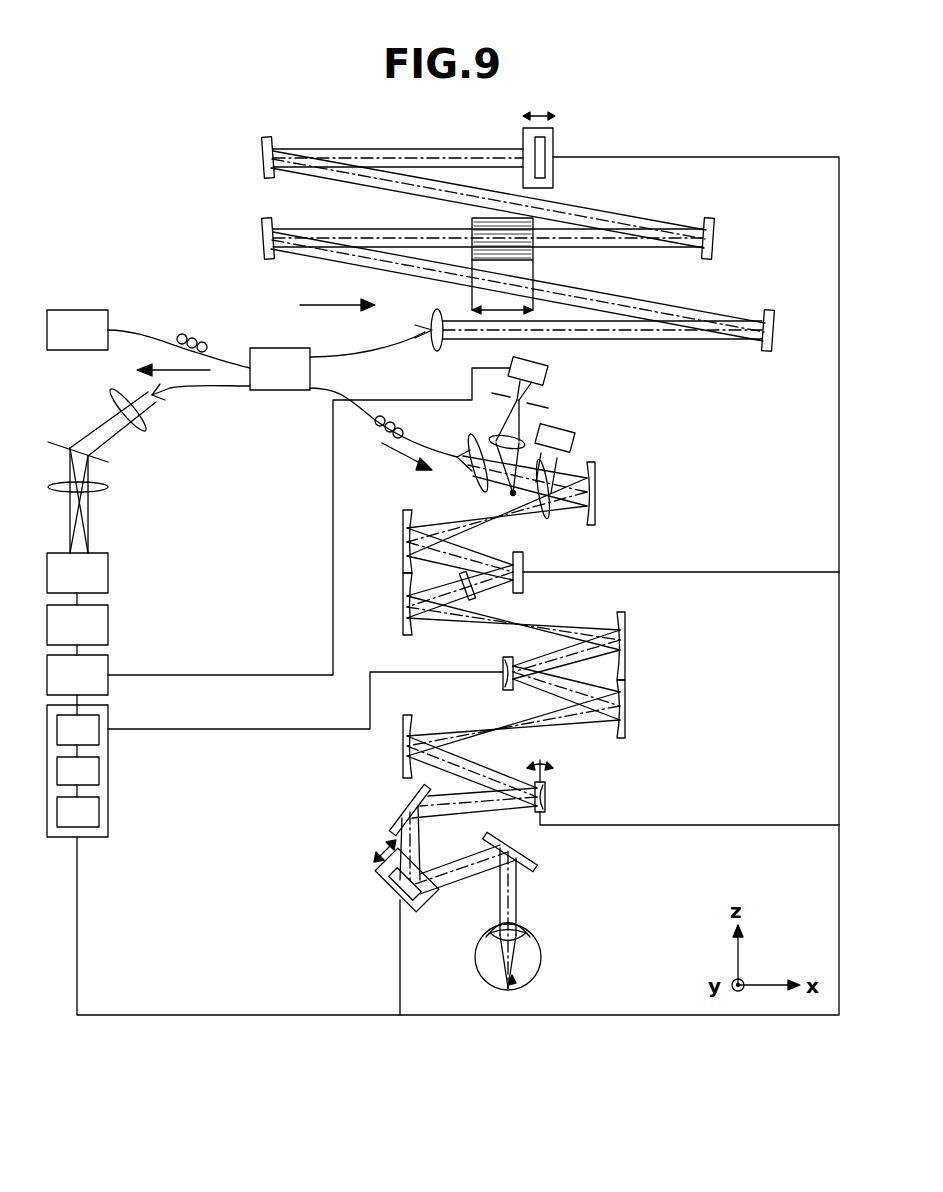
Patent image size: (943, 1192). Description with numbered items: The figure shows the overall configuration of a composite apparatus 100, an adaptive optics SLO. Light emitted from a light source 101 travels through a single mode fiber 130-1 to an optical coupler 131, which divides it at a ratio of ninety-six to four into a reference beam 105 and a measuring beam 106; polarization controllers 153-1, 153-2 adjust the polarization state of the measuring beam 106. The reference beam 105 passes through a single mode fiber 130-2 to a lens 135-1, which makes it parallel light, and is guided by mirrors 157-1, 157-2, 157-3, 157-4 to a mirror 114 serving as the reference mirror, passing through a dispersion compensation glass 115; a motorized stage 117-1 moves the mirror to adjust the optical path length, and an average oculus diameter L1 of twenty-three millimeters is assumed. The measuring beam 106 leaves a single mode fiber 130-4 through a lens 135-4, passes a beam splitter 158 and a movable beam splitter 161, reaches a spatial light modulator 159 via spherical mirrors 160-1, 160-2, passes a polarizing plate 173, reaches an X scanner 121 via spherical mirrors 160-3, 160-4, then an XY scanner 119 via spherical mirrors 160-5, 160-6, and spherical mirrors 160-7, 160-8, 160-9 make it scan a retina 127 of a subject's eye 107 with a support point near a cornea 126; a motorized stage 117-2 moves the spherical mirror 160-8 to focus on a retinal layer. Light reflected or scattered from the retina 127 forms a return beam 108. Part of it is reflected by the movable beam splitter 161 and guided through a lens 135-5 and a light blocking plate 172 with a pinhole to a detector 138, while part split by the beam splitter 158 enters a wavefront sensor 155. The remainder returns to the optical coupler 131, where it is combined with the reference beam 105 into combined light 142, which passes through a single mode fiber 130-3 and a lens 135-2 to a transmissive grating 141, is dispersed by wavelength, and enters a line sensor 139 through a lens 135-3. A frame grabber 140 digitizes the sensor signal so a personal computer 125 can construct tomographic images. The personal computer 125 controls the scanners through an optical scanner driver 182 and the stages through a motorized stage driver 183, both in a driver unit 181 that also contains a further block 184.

The composite apparatus 100 is at (116, 191).
The light source 101 is at (73, 322).
The reference beam 105 is at (320, 302).
The measuring beam 106 is at (386, 471).
The subject's eye 107 is at (540, 942).
The return beam 108 is at (530, 981).
The mirror 114 is at (545, 172).
The dispersion compensation glass 115 is at (533, 262).
The motorized stage 117-1 is at (545, 138).
The motorized stage 117-2 is at (387, 886).
The XY scanner 119 is at (547, 788).
The X scanner 121 is at (501, 668).
The personal computer 125 is at (100, 663).
The cornea 126 is at (530, 922).
The retina 127 is at (510, 990).
The single mode fiber 130-1 is at (141, 326).
The single mode fiber 130-2 is at (413, 306).
The single mode fiber 130-3 is at (215, 384).
The single mode fiber 130-4 is at (324, 400).
The optical coupler 131 is at (284, 362).
The lens 135-1 is at (432, 324).
The lens 135-2 is at (164, 418).
The lens 135-3 is at (108, 488).
The lens 135-4 is at (470, 466).
The lens 135-5 is at (494, 439).
The detector 138 is at (533, 362).
The line sensor 139 is at (100, 573).
The frame grabber 140 is at (100, 627).
The transmissive grating 141 is at (59, 444).
The combined light 142 is at (139, 368).
The polarization controller 153-1 is at (187, 334).
The polarization controller 153-2 is at (380, 416).
The wavefront sensor 155 is at (568, 448).
The mirror 157-1 is at (768, 354).
The mirror 157-2 is at (266, 238).
The mirror 157-3 is at (715, 238).
The mirror 157-4 is at (266, 158).
The beam splitter 158 is at (546, 501).
The spatial light modulator 159 is at (525, 558).
The spherical mirror 160-1 is at (598, 494).
The spherical mirror 160-2 is at (402, 541).
The spherical mirror 160-3 is at (402, 602).
The spherical mirror 160-4 is at (628, 646).
The spherical mirror 160-5 is at (628, 706).
The spherical mirror 160-6 is at (402, 768).
The spherical mirror 160-7 is at (402, 808).
The spherical mirror 160-8 is at (412, 896).
The spherical mirror 160-9 is at (534, 866).
The movable beam splitter 161 is at (464, 476).
The light blocking plate 172 is at (533, 396).
The polarizing plate 173 is at (475, 598).
The driver unit 181 is at (104, 712).
The optical scanner driver 182 is at (92, 733).
The motorized stage driver 183 is at (94, 770).
The control unit 184 is at (94, 810).
The average diameter of an oculus L1 is at (490, 316).